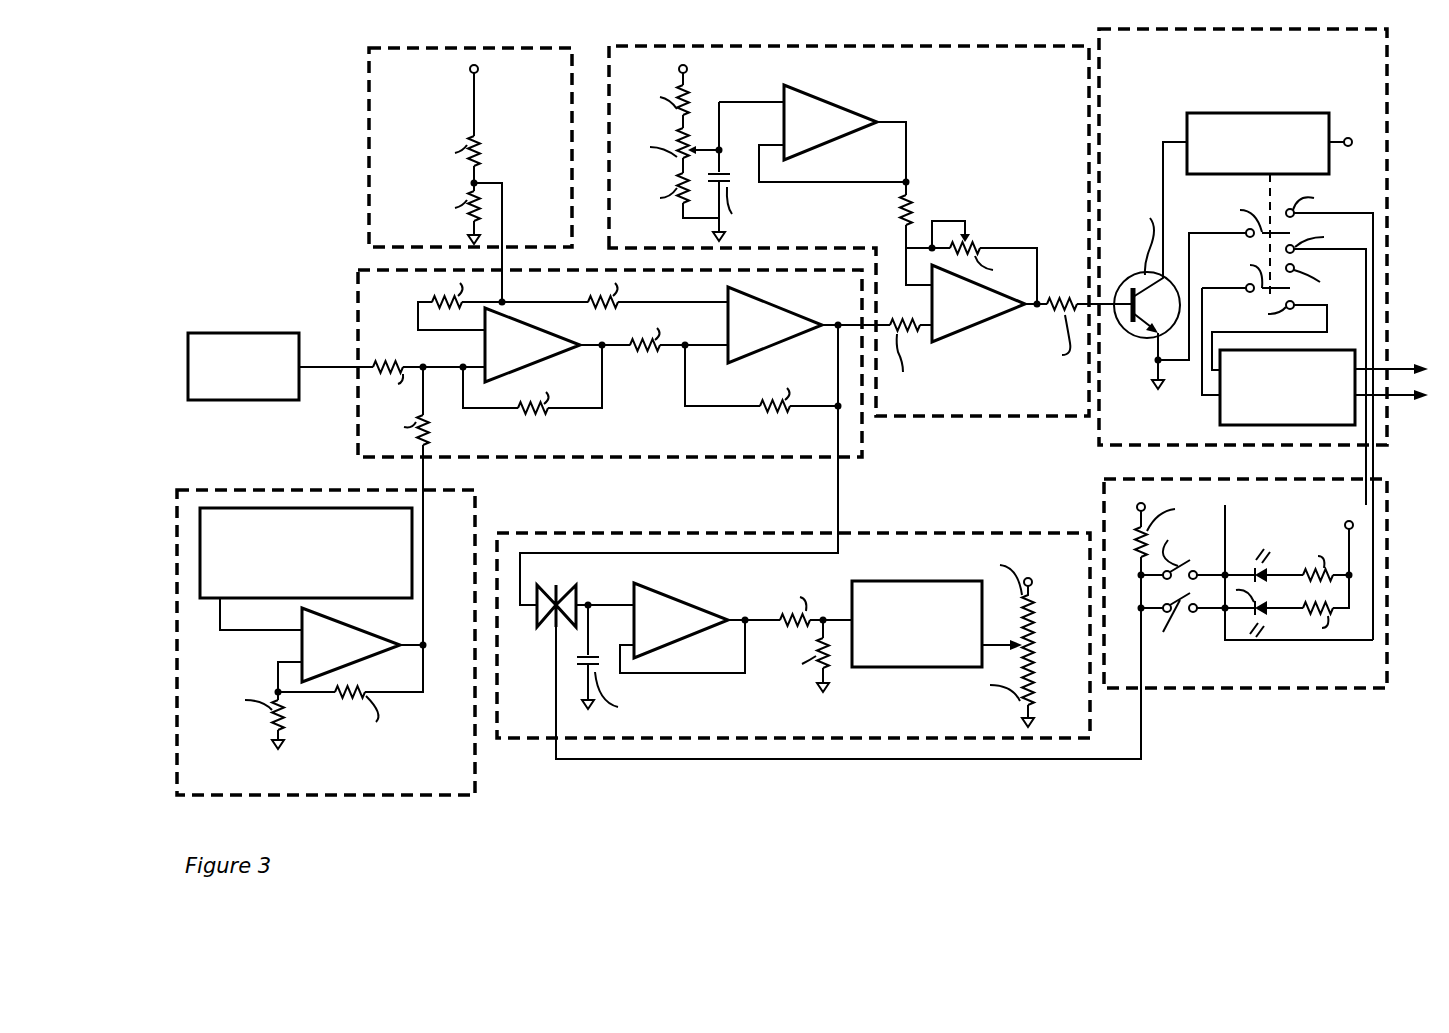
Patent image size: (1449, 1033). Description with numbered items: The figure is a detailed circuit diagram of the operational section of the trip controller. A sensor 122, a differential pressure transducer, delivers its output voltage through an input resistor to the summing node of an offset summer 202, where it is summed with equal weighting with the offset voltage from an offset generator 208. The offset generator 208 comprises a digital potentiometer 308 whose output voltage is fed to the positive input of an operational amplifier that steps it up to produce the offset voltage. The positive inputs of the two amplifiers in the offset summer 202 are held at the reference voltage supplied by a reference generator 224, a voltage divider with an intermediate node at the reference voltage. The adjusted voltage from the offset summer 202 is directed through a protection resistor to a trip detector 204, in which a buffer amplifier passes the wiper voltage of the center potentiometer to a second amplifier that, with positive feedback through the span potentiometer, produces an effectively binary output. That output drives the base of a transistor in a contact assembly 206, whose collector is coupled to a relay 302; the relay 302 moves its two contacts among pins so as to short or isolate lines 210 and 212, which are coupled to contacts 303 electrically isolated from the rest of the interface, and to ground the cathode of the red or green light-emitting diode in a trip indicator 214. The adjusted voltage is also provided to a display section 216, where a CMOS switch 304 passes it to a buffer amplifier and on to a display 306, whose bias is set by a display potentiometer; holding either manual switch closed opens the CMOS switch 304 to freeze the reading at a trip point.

The sensor 122 is at (280, 366).
The reference generator 224 is at (470, 175).
The offset summer 202 is at (624, 457).
The trip detector 204 is at (871, 231).
The contact assembly 206 is at (1268, 334).
The relay 302 is at (1258, 143).
The contacts 303 is at (1287, 387).
The line 210 is at (1392, 367).
The line 212 is at (1414, 398).
The trip indicator 214 is at (971, 619).
The display section 216 is at (793, 572).
The CMOS switch 304 is at (544, 586).
The display 306 is at (917, 624).
The offset generator 208 is at (326, 642).
The digital potentiometer 308 is at (306, 553).